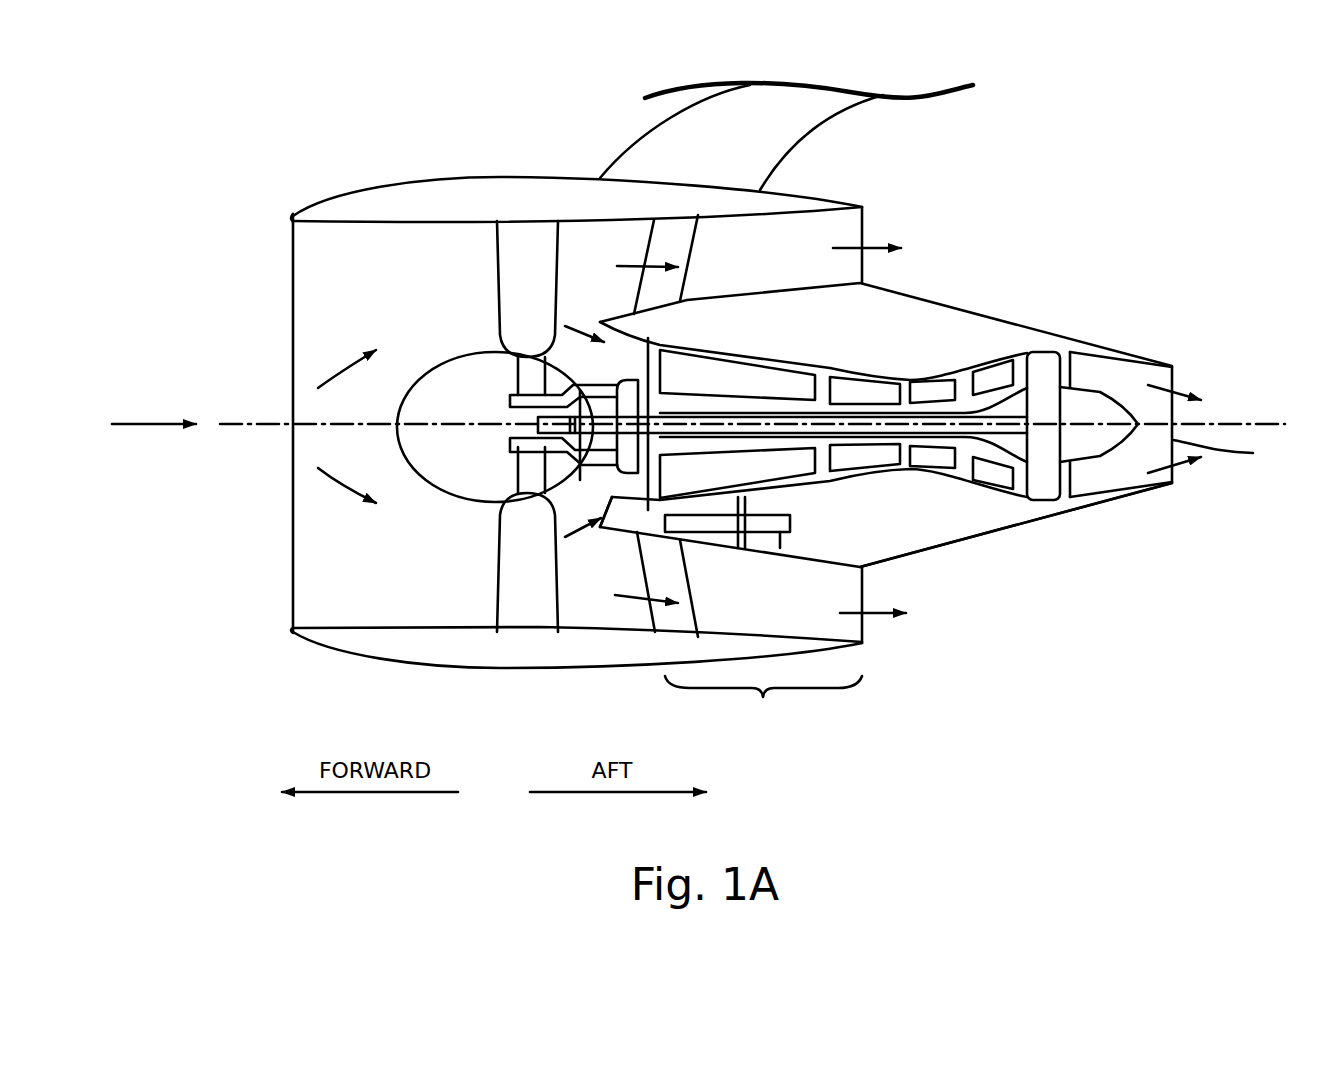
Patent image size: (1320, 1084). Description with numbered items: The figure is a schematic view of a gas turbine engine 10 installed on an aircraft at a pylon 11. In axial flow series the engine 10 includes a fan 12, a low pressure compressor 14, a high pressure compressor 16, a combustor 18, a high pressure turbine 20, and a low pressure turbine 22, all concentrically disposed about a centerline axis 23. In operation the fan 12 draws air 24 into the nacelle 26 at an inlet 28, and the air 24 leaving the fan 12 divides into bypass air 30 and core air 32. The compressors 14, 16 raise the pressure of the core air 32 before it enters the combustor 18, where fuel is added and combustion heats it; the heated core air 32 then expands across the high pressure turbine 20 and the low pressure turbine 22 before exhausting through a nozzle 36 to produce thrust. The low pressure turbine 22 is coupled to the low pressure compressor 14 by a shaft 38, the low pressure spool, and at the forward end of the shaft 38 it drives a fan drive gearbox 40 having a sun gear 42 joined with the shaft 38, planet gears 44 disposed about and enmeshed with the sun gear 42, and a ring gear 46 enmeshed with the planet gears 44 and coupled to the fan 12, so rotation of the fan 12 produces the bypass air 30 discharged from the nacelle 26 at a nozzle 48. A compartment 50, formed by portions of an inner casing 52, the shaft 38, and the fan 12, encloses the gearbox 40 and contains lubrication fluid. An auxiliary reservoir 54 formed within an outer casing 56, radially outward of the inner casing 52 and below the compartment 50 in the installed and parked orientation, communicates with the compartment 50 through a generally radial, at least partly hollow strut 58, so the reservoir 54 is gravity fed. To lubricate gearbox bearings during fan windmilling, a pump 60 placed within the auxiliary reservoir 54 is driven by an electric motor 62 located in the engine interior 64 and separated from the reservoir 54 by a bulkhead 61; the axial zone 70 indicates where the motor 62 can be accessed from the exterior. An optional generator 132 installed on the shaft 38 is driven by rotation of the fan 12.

The gas turbine engine 10 is at (1012, 226).
The pylon 11 is at (786, 136).
The fan 12 is at (497, 268).
The low pressure compressor 14 is at (737, 424).
The high pressure compressor 16 is at (866, 395).
The combustor 18 is at (938, 395).
The high pressure turbine 20 is at (998, 375).
The low pressure turbine 22 is at (1099, 426).
The centerline axis 23 is at (1223, 423).
The air 24 is at (150, 424).
The nacelle 26 is at (385, 177).
The inlet 28 is at (293, 467).
The bypass air 30 is at (633, 263).
The core air 32 is at (568, 326).
The nozzle 36 is at (1228, 455).
The shaft 38 is at (962, 430).
The fan drive gearbox 40 is at (563, 441).
The sun gear 42 is at (518, 376).
The planet gears 44 is at (660, 395).
The ring gear 46 is at (643, 403).
The nozzle 48 is at (863, 222).
The compartment 50 is at (635, 462).
The inner casing 52 is at (578, 488).
The auxiliary reservoir 54 is at (627, 522).
The outer casing 56 is at (907, 557).
The strut 58 is at (645, 528).
The pump 60 is at (705, 533).
The bulkhead 61 is at (741, 533).
The electric motor 62 is at (780, 533).
The interior 64 is at (852, 518).
The zone 70 is at (763, 705).
The generator 132 is at (537, 428).